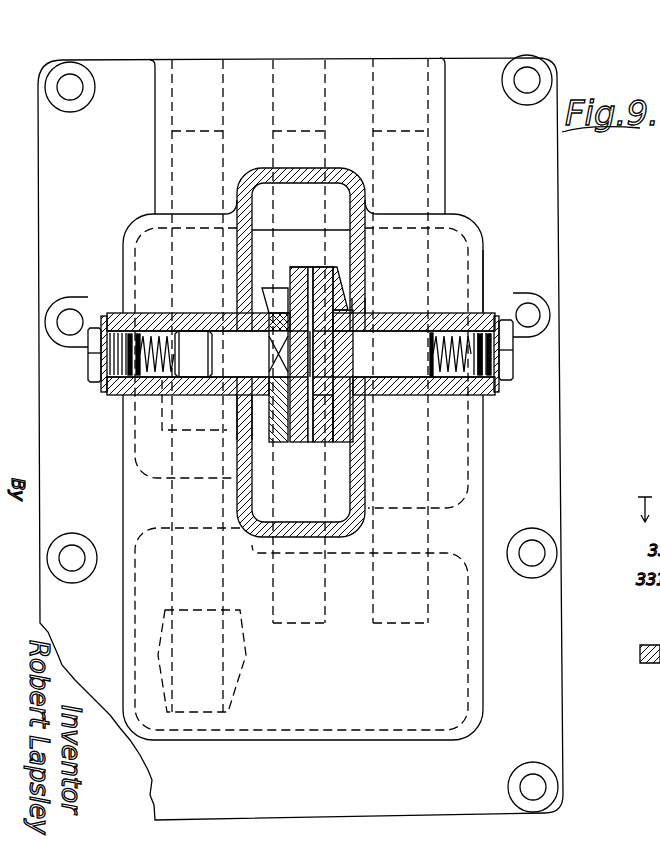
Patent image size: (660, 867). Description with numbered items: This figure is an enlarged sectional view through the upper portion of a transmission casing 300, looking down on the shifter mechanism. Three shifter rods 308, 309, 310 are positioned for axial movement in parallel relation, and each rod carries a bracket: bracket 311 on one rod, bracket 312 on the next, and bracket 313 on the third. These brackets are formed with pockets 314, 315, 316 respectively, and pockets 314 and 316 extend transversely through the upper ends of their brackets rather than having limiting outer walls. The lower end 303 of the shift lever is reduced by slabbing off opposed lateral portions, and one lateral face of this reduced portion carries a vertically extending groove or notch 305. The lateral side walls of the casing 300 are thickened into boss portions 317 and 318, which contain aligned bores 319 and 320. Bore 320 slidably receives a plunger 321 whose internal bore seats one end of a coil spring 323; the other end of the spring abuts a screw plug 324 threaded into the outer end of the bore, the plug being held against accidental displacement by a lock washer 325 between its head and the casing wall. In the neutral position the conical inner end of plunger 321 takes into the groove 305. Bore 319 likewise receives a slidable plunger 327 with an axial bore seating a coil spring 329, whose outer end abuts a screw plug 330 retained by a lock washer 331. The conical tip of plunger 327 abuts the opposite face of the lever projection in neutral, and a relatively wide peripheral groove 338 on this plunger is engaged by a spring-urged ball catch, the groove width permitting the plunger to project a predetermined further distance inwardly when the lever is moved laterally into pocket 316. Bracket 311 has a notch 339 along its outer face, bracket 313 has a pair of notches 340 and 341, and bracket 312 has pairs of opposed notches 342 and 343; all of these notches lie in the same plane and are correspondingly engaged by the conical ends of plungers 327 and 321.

The transmission casing 300 is at (490, 628).
The lower end of shift lever 303 is at (268, 342).
The groove or notch 305 is at (313, 362).
The shifter rod 308 is at (252, 540).
The shifter rod 309 is at (303, 628).
The shifter rod 310 is at (410, 627).
The bracket 311 is at (275, 438).
The bracket 312 is at (303, 443).
The bracket 313 is at (312, 438).
The pocket 314 is at (247, 302).
The pocket 315 is at (357, 305).
The pocket 316 is at (326, 395).
The boss portion 317 is at (123, 308).
The boss portion 318 is at (430, 310).
The bore 319 is at (133, 397).
The bore 320 is at (460, 392).
The plunger 321 is at (460, 308).
The coil spring 323 is at (493, 308).
The screw plug 324 is at (513, 363).
The lock washer 325 is at (497, 383).
The plunger 327 is at (236, 314).
The coil spring 329 is at (110, 397).
The screw plug 330 is at (88, 358).
The lock washer 331 is at (103, 378).
The peripheral groove 338 is at (194, 354).
The notch 339 is at (238, 438).
The notch 340 is at (326, 412).
The notch 341 is at (333, 280).
The notch 342 is at (246, 419).
The notch 343 is at (311, 270).